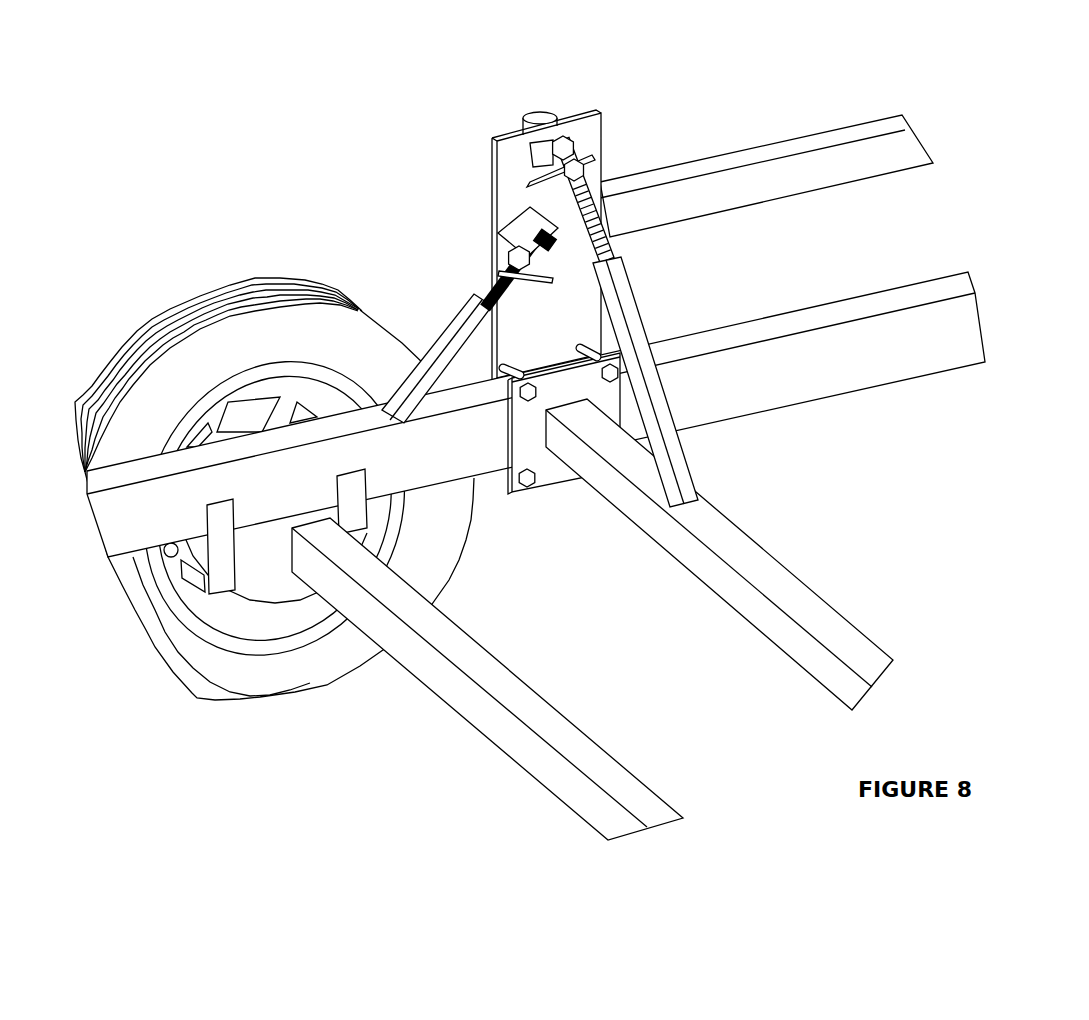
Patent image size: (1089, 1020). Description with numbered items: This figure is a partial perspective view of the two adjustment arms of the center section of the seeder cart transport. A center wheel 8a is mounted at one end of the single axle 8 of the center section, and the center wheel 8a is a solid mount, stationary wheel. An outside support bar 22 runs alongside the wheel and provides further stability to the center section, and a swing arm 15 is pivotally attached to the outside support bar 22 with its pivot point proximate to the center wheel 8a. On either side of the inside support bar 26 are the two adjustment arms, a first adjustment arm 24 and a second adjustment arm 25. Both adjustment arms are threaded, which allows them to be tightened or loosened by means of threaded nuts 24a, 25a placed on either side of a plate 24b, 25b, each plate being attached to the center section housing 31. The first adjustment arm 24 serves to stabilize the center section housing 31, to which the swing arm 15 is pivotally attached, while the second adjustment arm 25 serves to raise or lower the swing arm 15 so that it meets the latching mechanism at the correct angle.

The axle 8 is at (442, 670).
The center wheel 8a is at (248, 340).
The swing arm 15 is at (768, 185).
The outside support bar 22 is at (883, 357).
The first adjustment arm 24 is at (588, 198).
The threaded nut 24a is at (556, 141).
The plate 24b is at (545, 155).
The second adjustment arm 25 is at (480, 292).
The threaded nut 25a is at (497, 252).
The plate 25b is at (549, 280).
The inside support bar 26 is at (832, 627).
The center section housing 31 is at (510, 150).